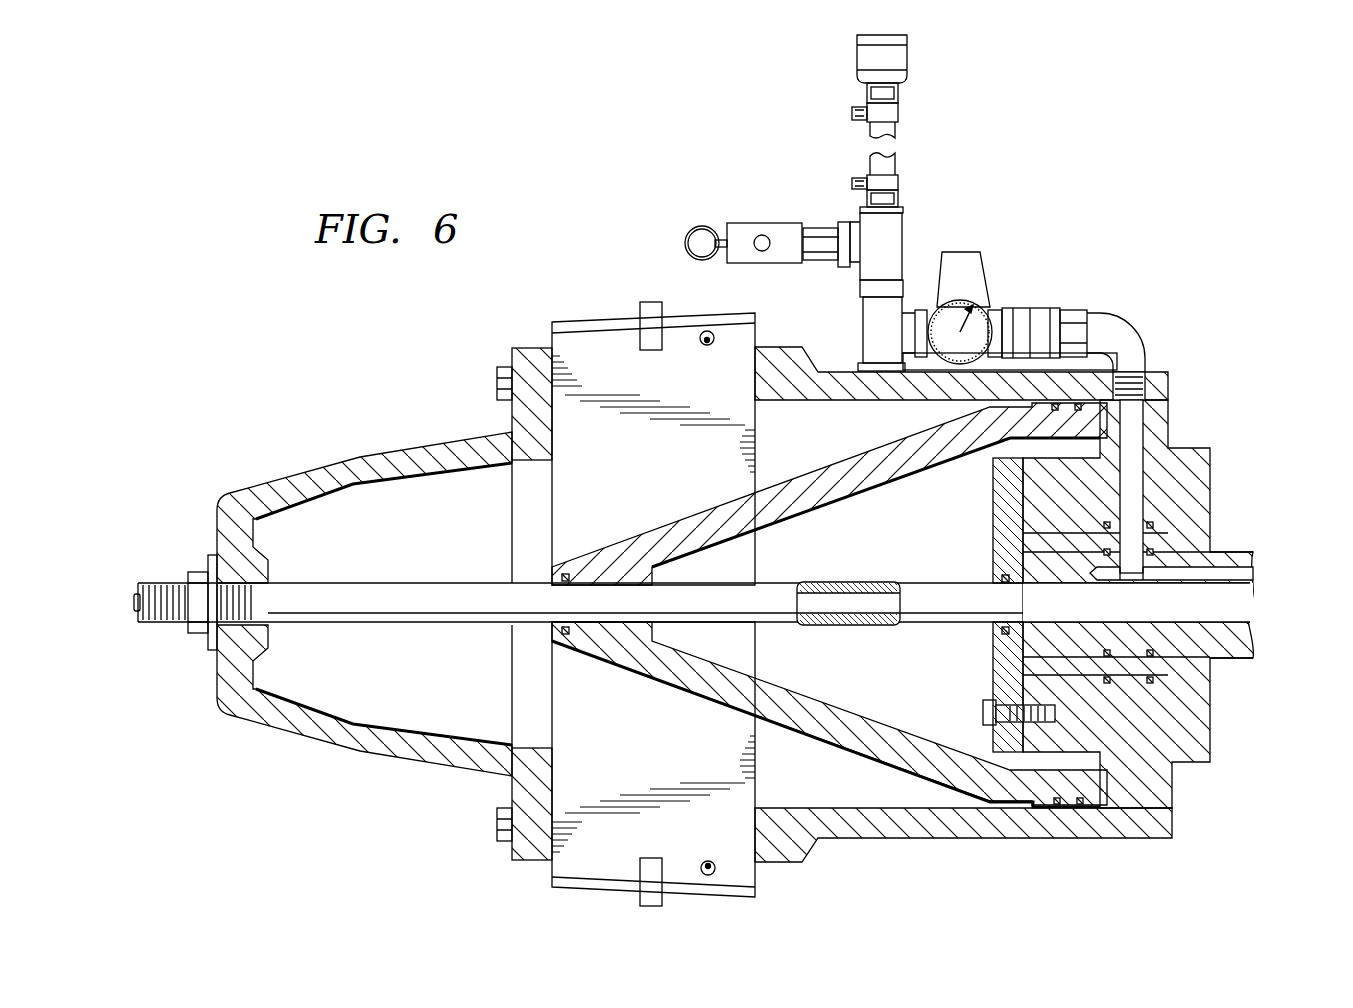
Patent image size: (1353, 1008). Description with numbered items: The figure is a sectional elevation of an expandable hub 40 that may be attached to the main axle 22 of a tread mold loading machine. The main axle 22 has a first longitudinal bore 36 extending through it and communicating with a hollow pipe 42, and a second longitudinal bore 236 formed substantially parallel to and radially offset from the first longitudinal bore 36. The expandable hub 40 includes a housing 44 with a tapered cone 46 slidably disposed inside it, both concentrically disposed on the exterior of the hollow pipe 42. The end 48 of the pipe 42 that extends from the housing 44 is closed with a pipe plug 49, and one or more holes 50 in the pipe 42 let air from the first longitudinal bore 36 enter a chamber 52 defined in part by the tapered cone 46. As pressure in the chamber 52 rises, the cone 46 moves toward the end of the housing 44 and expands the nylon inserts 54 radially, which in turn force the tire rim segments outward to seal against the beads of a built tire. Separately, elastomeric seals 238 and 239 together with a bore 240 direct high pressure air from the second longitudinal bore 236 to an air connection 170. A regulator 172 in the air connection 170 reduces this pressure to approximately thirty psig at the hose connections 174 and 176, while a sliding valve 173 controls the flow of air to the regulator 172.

The main axle 22 is at (1237, 552).
The first longitudinal bore 36 is at (1238, 597).
The expandable hub 40 is at (326, 392).
The hollow pipe 42 is at (345, 583).
The housing 44 is at (888, 838).
The tapered cone 46 is at (810, 470).
The end of pipe 48 is at (165, 583).
The pipe plug 49 is at (145, 622).
The holes 50 is at (833, 584).
The chamber 52 is at (933, 541).
The nylon inserts 54 is at (620, 376).
The air connection 170 is at (1112, 312).
The regulator 172 is at (990, 307).
The sliding valve 173 is at (1048, 308).
The hose connection 174 is at (920, 170).
The hose connection 176 is at (854, 362).
The second longitudinal bore 236 is at (1253, 573).
The elastomeric seals 238 is at (1153, 523).
The elastomeric seals 239 is at (1160, 645).
The bore 240 is at (1127, 523).